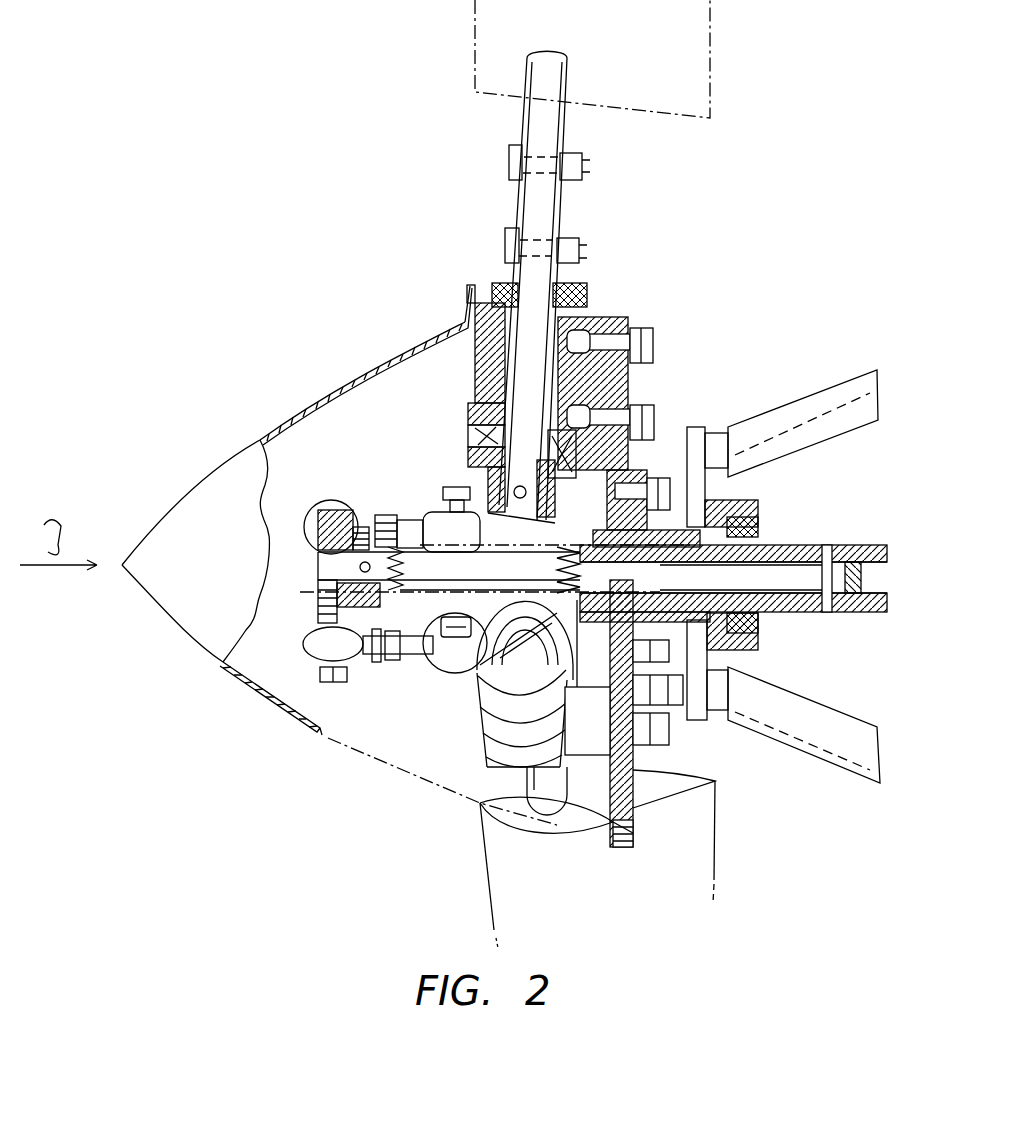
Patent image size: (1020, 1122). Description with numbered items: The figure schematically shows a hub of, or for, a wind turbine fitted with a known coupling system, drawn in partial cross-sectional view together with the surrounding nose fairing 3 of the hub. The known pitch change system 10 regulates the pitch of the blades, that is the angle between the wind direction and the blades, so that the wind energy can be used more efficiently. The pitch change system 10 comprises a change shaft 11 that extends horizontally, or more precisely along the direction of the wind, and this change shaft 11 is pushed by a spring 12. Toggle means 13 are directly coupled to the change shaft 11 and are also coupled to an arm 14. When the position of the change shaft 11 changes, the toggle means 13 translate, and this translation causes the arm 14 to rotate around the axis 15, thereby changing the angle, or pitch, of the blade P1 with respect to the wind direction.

The spinner / nose fairing 3 is at (333, 355).
The pitch change system 10 is at (765, 346).
The change shaft 11 is at (873, 553).
The spring 12 is at (392, 590).
The toggle means 13 is at (408, 650).
The arm 14 is at (543, 683).
The axis 15 is at (530, 778).
The blade P1 is at (510, 887).